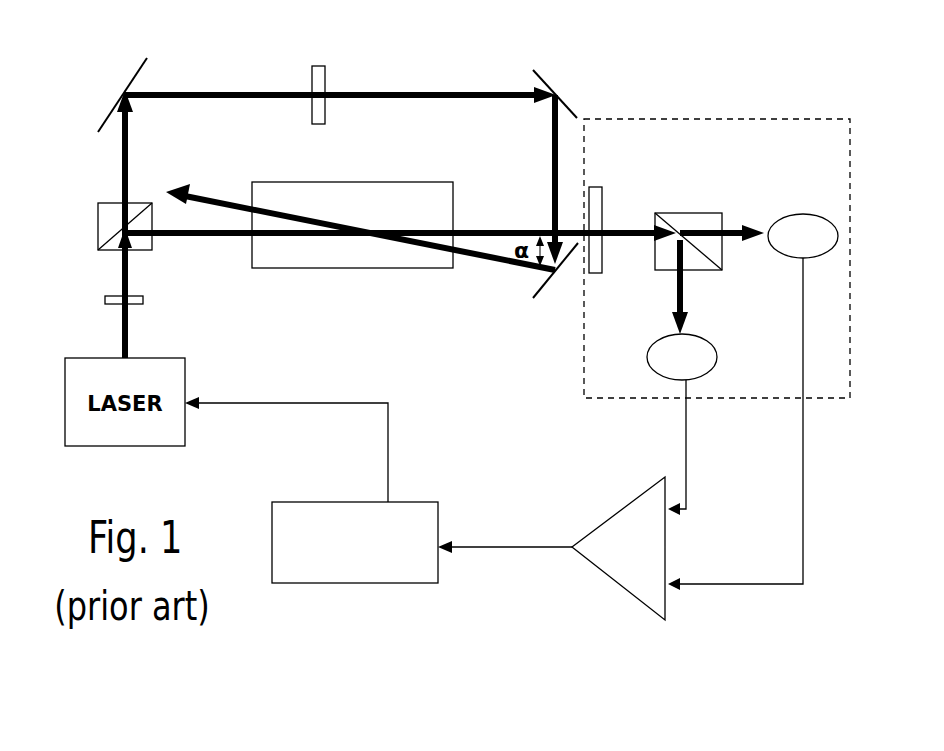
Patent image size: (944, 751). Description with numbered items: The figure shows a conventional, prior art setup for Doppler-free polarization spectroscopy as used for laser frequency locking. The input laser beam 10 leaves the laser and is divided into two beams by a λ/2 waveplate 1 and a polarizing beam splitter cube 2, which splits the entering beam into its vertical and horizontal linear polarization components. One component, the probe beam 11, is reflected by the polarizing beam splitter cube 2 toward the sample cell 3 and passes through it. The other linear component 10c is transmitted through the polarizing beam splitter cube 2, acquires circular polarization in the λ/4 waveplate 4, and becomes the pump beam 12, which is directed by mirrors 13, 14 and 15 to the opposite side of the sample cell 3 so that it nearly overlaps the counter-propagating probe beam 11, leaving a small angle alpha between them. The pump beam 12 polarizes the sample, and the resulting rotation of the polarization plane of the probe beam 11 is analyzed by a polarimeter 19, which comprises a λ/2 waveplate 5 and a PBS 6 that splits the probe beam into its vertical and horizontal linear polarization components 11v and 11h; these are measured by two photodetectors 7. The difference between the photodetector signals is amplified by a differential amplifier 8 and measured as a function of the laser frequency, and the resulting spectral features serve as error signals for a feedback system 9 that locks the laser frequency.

The λ/2 waveplate 1 is at (143, 300).
The polarizing beam splitter cube 2 is at (98, 207).
The sample cell 3 is at (322, 182).
The λ/4 waveplate 4 is at (312, 82).
The λ/2 waveplate 5 is at (596, 186).
The PBS 6 is at (680, 213).
The photodetectors 7 is at (790, 214).
The differential amplifier 8 is at (638, 498).
The feedback system 9 is at (272, 540).
The input laser beam 10 is at (122, 338).
The linear component of input laser beam 10c is at (122, 143).
The probe beam 11 is at (204, 240).
The horizontal linear polarization component 11h is at (672, 283).
The vertical linear polarization component 11v is at (742, 243).
The pump beam 12 is at (493, 258).
The mirror 13 is at (133, 74).
The mirror 14 is at (542, 68).
The mirror 15 is at (546, 288).
The polarimeter 19 is at (736, 119).